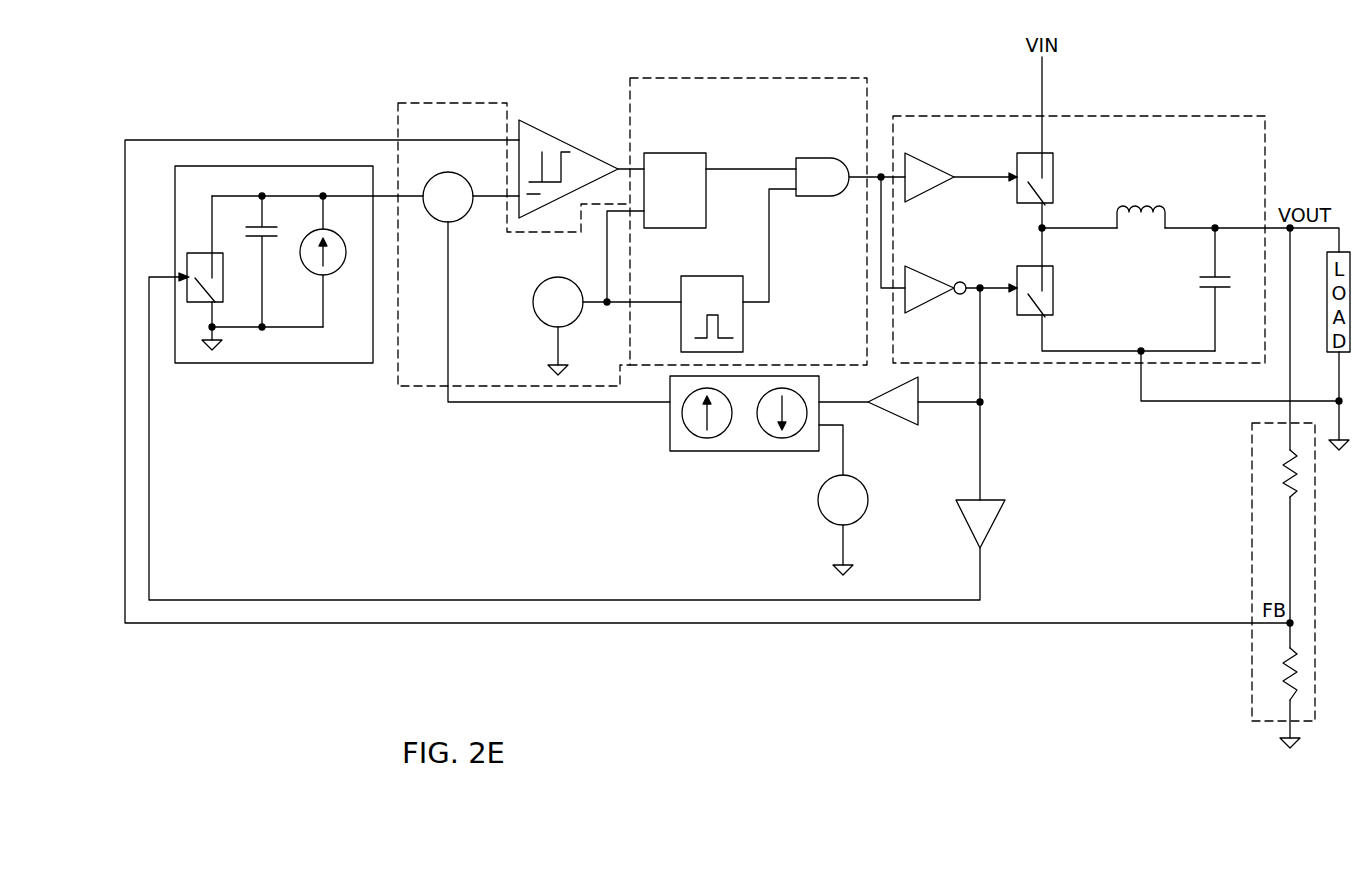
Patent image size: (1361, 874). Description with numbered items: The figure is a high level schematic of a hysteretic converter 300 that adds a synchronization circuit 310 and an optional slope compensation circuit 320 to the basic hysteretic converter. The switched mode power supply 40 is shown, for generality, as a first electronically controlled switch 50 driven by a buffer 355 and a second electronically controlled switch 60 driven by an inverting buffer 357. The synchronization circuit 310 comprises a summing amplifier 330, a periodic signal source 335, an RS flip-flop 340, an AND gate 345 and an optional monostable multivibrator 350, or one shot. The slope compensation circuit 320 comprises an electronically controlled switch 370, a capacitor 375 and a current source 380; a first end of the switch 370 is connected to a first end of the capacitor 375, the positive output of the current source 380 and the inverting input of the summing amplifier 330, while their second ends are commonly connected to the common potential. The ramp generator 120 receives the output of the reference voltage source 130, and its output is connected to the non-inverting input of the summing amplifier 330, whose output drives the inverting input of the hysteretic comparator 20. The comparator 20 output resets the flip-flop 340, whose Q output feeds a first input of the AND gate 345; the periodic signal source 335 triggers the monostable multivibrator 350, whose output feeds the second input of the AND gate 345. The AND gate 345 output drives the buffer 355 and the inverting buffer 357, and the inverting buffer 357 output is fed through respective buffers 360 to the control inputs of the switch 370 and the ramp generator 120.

The hysteretic converter 300 is at (613, 43).
The synchronization circuit 310 is at (768, 78).
The hysteretic comparator 20 is at (550, 132).
The RS flip-flop 340 is at (682, 152).
The AND gate 345 is at (819, 198).
The monostable multivibrator 350 is at (718, 276).
The periodic signal source 335 is at (533, 302).
The summing amplifier 330 is at (466, 214).
The slope compensation circuit 320 is at (299, 283).
The electronically controlled switch 370 is at (223, 277).
The capacitor 375 is at (268, 222).
The current source 380 is at (346, 252).
The switched mode power supply 40 is at (1265, 152).
The buffer 355 is at (918, 153).
The inverting buffer 357 is at (918, 266).
The first electronically controlled switch 50 is at (1053, 180).
The second electronically controlled switch 60 is at (1053, 292).
The ramp generator 120 is at (733, 451).
The reference voltage source 130 is at (868, 500).
The buffer 360 is at (919, 412).